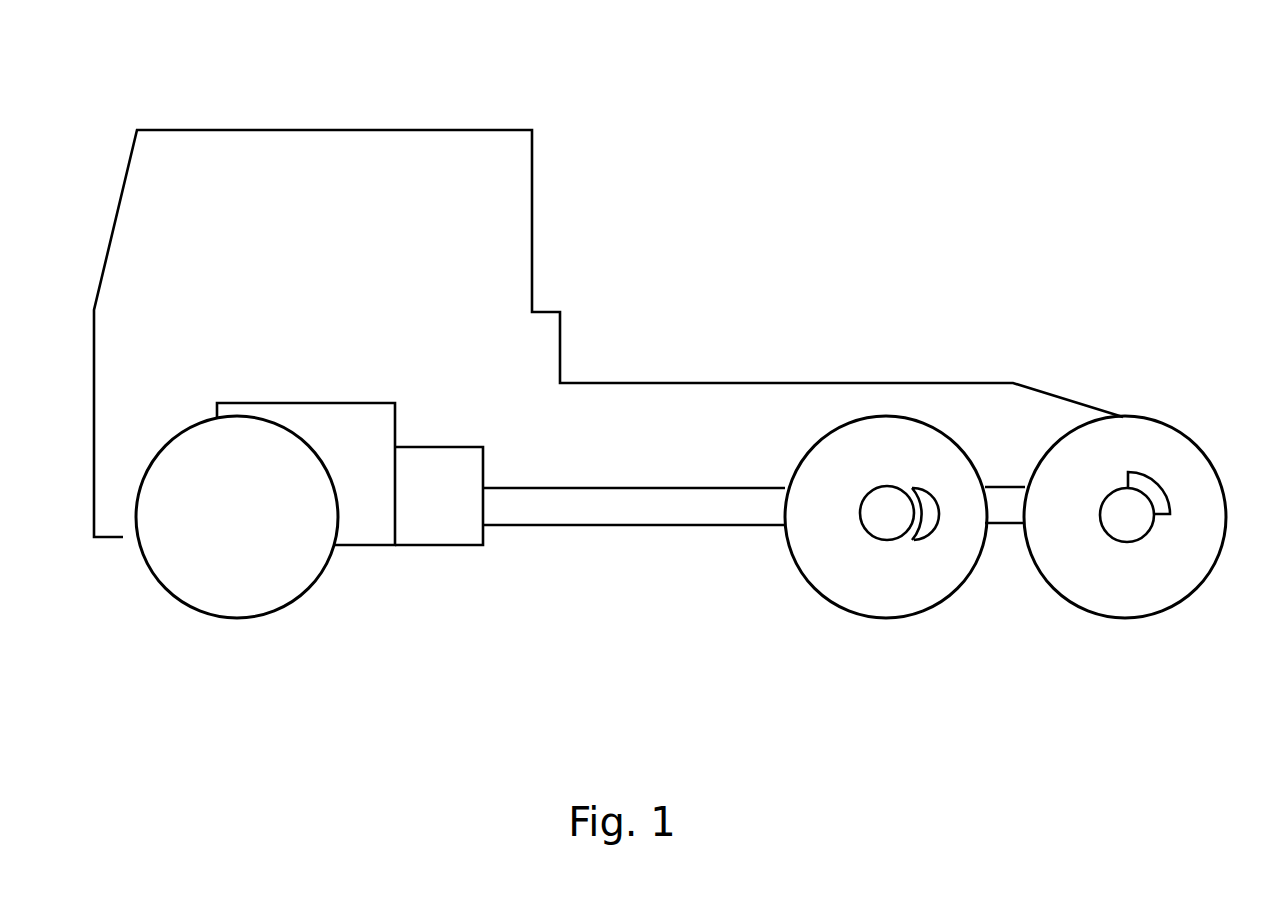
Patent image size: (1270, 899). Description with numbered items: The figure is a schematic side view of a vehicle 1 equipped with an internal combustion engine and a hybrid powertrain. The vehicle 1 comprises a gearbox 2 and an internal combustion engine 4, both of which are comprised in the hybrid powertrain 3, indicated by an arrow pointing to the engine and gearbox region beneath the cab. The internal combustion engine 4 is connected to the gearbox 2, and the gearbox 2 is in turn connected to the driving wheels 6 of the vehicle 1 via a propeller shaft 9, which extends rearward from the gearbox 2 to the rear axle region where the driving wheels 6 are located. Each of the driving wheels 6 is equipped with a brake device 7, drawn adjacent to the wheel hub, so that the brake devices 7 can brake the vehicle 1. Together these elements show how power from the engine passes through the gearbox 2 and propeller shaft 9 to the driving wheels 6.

The vehicle 1 is at (660, 110).
The gearbox 2 is at (470, 547).
The hybrid powertrain 3 is at (412, 588).
The internal combustion engine 4 is at (272, 402).
The driving wheels 6 is at (940, 600).
The brake devices 7 is at (912, 490).
The propeller shaft 9 is at (600, 524).